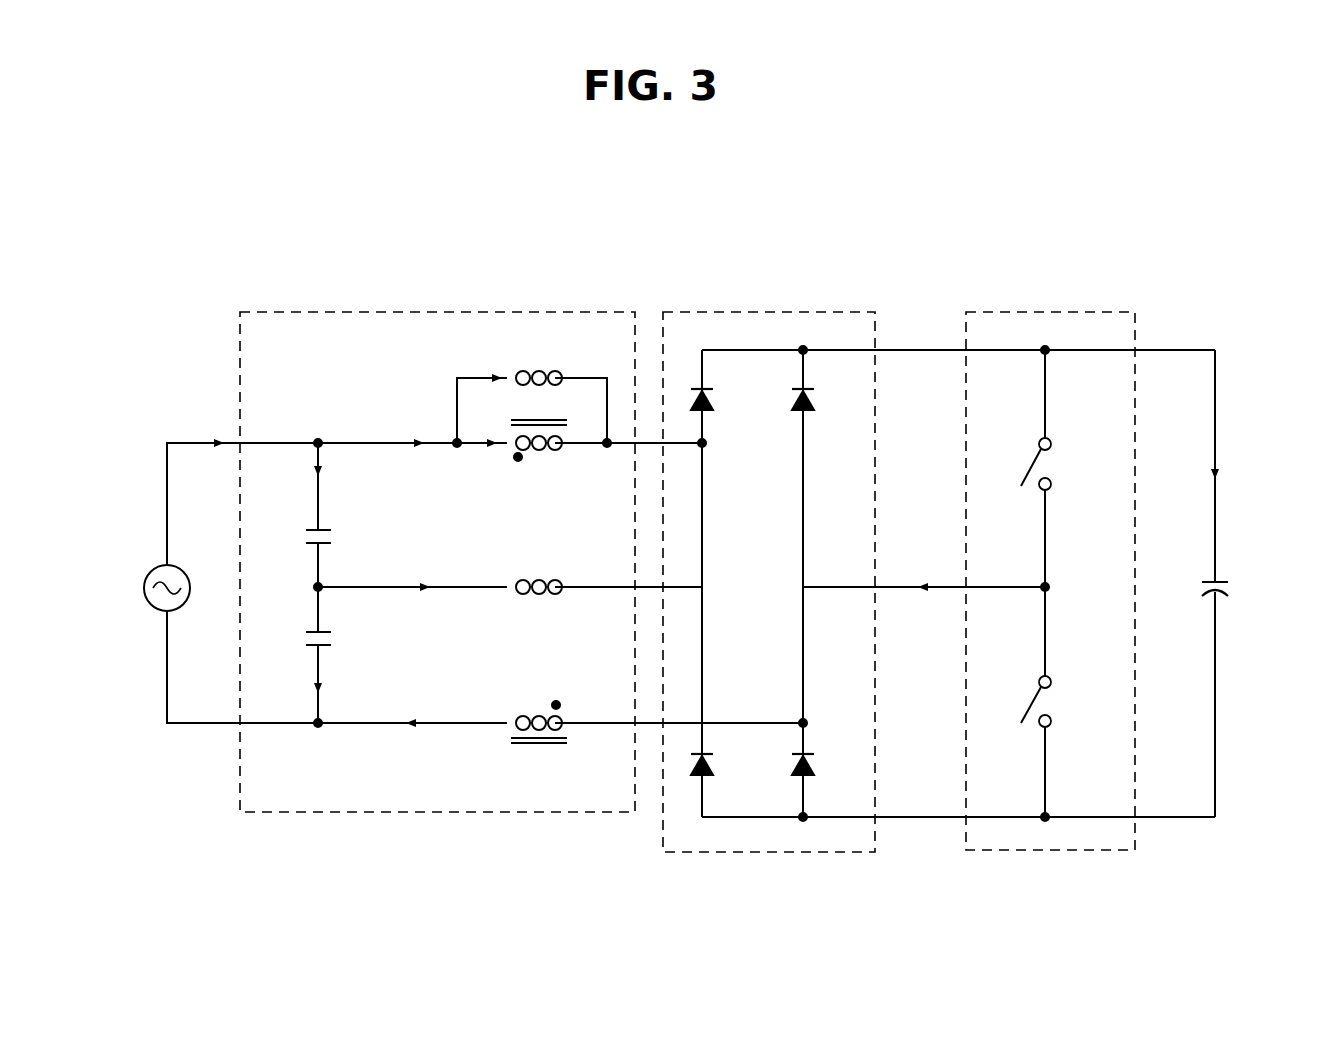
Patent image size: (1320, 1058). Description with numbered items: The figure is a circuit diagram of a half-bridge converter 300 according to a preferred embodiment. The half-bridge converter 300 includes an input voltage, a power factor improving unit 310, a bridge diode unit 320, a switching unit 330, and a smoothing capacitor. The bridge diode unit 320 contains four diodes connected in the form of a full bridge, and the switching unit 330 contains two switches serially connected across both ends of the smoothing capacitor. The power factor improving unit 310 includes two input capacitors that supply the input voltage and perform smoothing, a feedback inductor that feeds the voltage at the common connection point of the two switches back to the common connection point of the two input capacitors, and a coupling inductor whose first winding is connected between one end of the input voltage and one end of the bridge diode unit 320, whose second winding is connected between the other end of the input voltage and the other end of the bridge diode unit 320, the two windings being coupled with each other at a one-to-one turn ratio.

The half-bridge converter 300 is at (1217, 258).
The power factor improving unit 310 is at (445, 313).
The bridge diode unit 320 is at (763, 310).
The switching unit 330 is at (1060, 310).